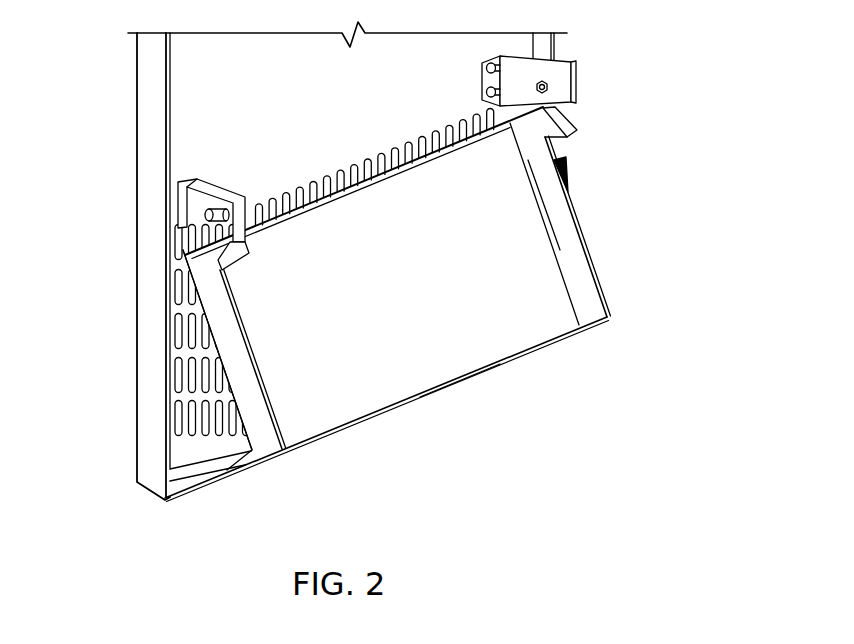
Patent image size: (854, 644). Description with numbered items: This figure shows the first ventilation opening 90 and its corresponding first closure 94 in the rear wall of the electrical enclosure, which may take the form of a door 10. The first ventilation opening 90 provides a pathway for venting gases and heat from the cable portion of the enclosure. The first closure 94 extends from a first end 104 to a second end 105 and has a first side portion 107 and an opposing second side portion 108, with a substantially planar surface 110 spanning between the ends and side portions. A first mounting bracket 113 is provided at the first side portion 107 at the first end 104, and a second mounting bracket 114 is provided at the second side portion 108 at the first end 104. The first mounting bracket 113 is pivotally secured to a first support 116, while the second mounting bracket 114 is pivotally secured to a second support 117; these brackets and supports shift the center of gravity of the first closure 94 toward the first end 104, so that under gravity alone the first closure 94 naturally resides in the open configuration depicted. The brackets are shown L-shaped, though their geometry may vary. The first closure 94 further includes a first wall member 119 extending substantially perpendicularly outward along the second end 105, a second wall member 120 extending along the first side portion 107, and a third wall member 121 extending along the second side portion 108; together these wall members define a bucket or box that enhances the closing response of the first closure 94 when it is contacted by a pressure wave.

The door 10 is at (210, 102).
The first ventilation opening 90 is at (206, 427).
The first closure 94 is at (628, 258).
The first end 104 is at (393, 158).
The second end 105 is at (470, 378).
The first side portion 107 is at (215, 340).
The second side portion 108 is at (557, 227).
The substantially planar surface 110 is at (430, 300).
The first mounting bracket 113 is at (232, 266).
The second mounting bracket 114 is at (554, 143).
The first support 116 is at (195, 208).
The second support 117 is at (575, 82).
The first wall member 119 is at (243, 405).
The second wall member 120 is at (583, 297).
The third wall member 121 is at (374, 432).